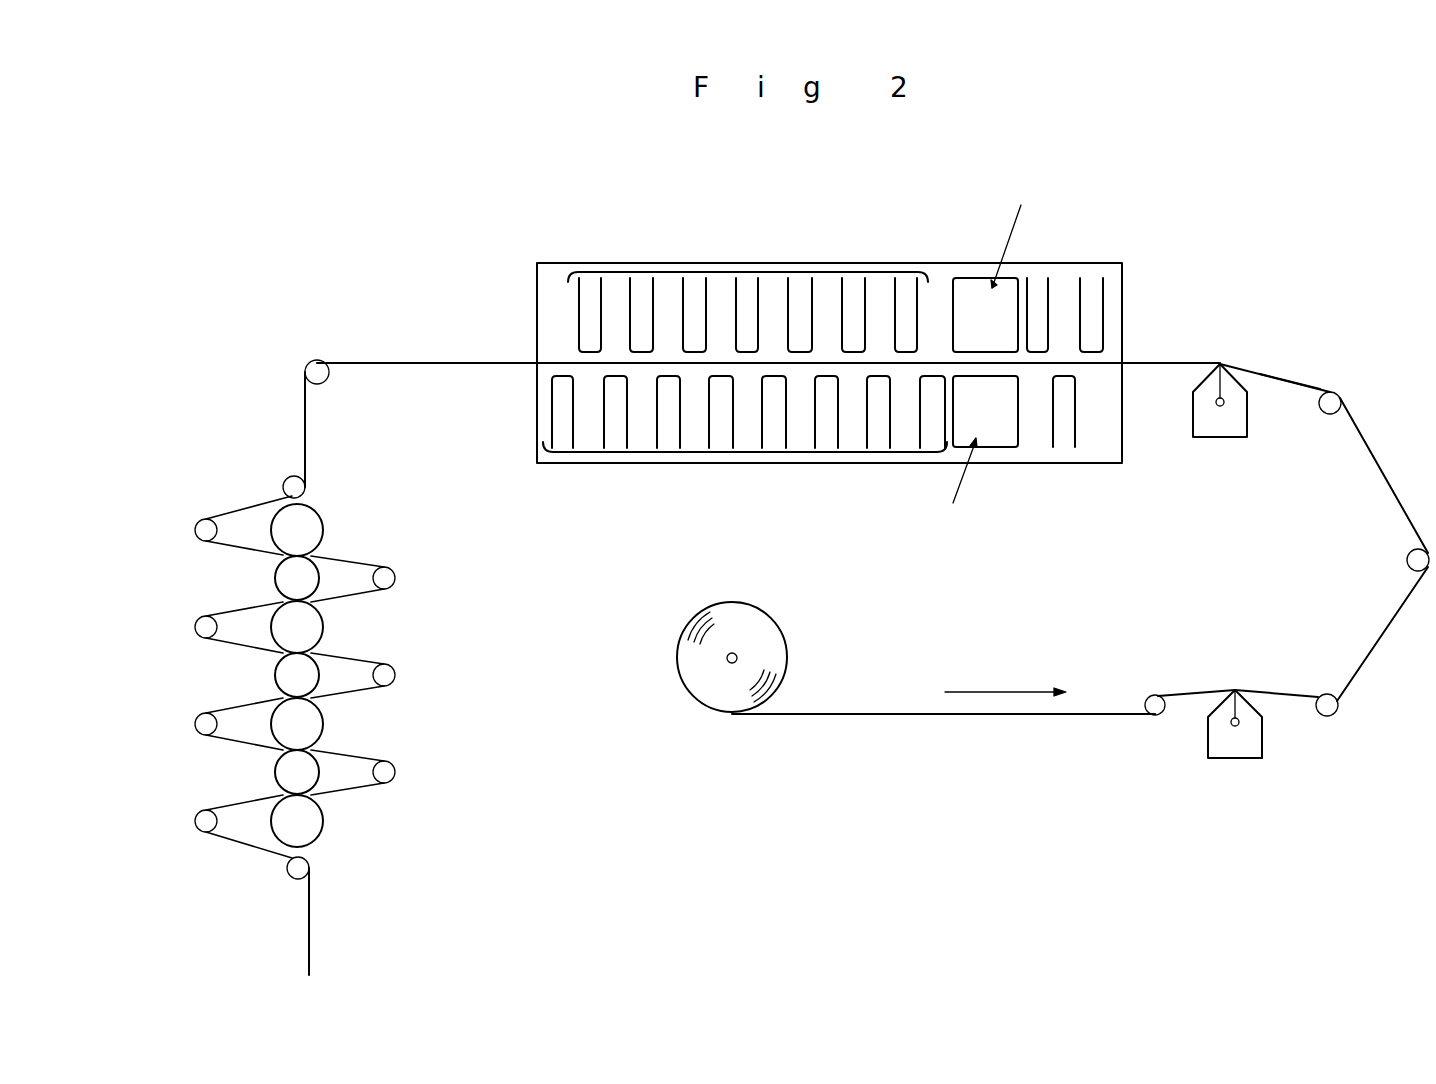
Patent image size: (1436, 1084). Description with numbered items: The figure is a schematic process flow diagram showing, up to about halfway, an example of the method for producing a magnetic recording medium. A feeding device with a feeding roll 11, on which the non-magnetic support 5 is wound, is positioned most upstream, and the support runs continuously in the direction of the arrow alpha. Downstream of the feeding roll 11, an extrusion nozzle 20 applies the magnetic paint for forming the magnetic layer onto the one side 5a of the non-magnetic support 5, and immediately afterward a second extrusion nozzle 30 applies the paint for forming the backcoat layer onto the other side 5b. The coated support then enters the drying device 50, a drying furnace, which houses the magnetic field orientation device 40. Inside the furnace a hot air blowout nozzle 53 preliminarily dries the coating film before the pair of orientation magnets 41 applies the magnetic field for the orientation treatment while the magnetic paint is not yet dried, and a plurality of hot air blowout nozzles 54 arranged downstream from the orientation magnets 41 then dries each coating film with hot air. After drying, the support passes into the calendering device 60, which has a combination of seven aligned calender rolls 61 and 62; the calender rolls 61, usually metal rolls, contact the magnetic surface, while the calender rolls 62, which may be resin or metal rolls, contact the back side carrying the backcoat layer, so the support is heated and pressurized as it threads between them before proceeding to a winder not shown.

The non-magnetic support 5 is at (1003, 716).
The one side of the non-magnetic support 5a is at (1087, 717).
The other side of the non-magnetic support 5b is at (1290, 383).
The feeding roll 11 is at (770, 628).
The extrusion nozzle 20 is at (1252, 742).
The extrusion nozzle 30 is at (1200, 420).
The magnetic field orientation device 40 is at (983, 277).
The orientation magnet 41 is at (1010, 287).
The drying device 50 is at (773, 262).
The hot air blowout nozzle 53 is at (1038, 290).
The hot air blowout nozzles 54 is at (750, 270).
The calendering device 60 is at (284, 667).
The calender rolls 61 is at (282, 580).
The calender rolls 62 is at (313, 523).